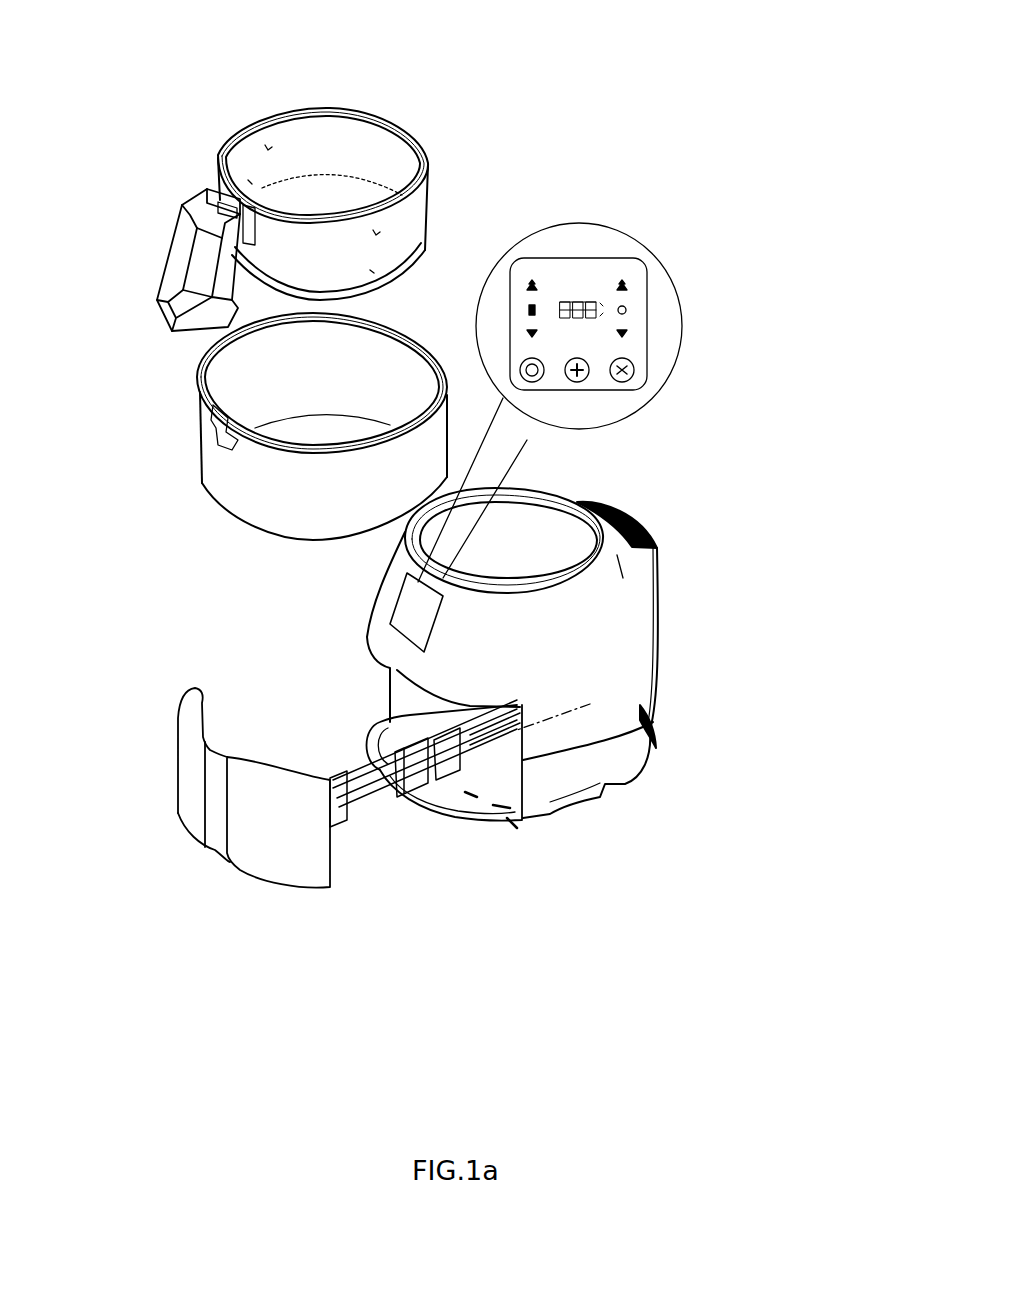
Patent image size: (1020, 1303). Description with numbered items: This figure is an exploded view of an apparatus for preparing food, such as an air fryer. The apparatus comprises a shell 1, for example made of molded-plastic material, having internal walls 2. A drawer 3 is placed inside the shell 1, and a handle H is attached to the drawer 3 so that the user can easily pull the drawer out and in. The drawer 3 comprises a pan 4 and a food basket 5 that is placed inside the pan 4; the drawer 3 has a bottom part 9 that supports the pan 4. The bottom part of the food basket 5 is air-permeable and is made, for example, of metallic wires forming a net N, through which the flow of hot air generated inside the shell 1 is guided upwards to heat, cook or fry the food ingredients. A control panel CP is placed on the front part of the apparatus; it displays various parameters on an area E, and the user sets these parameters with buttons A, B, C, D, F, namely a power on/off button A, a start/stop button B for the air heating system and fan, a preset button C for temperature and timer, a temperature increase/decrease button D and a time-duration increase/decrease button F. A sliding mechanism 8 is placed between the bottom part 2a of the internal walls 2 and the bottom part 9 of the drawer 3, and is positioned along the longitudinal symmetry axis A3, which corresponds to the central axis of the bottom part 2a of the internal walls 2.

The shell 1 is at (578, 605).
The internal walls 2 is at (387, 697).
The bottom part of the internal walls 2a is at (453, 798).
The drawer 3 is at (190, 765).
The pan 4 is at (213, 381).
The food basket 5 is at (233, 155).
The sliding mechanism 8 is at (466, 757).
The bottom part of the drawer 9 is at (393, 800).
The handle H is at (178, 263).
The net N is at (348, 197).
The control panel CP is at (418, 594).
The power on/off button A is at (622, 382).
The start/stop button B is at (577, 382).
The preset button C is at (532, 382).
The temperature adjustment button D is at (532, 280).
The display area E is at (577, 300).
The time adjustment button F is at (622, 280).
The longitudinal symmetry axis A3 is at (345, 788).